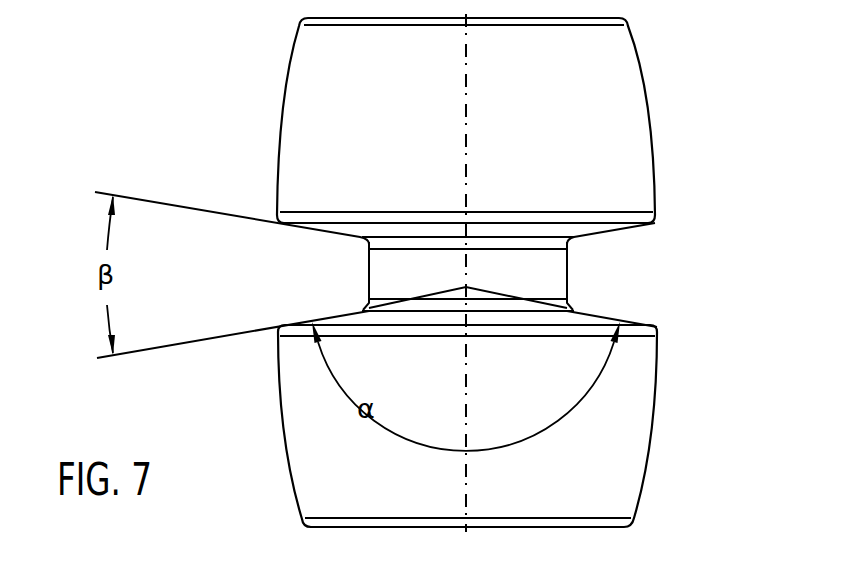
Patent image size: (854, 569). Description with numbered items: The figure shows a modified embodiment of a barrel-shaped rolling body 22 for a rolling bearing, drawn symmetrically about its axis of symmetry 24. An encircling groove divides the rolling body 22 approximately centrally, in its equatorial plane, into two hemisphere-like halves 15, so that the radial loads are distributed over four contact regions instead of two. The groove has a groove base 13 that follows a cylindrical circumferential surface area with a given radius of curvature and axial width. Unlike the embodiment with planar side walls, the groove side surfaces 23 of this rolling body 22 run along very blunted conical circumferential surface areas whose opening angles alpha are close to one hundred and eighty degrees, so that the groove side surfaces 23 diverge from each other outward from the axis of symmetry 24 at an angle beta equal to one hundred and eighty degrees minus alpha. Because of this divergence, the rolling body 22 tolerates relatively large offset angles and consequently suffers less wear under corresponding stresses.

The rolling body 22 is at (280, 106).
The halves 15 is at (647, 378).
The groove side surfaces 23 is at (600, 232).
The groove base 13 is at (567, 275).
The axis of symmetry 24 is at (467, 78).